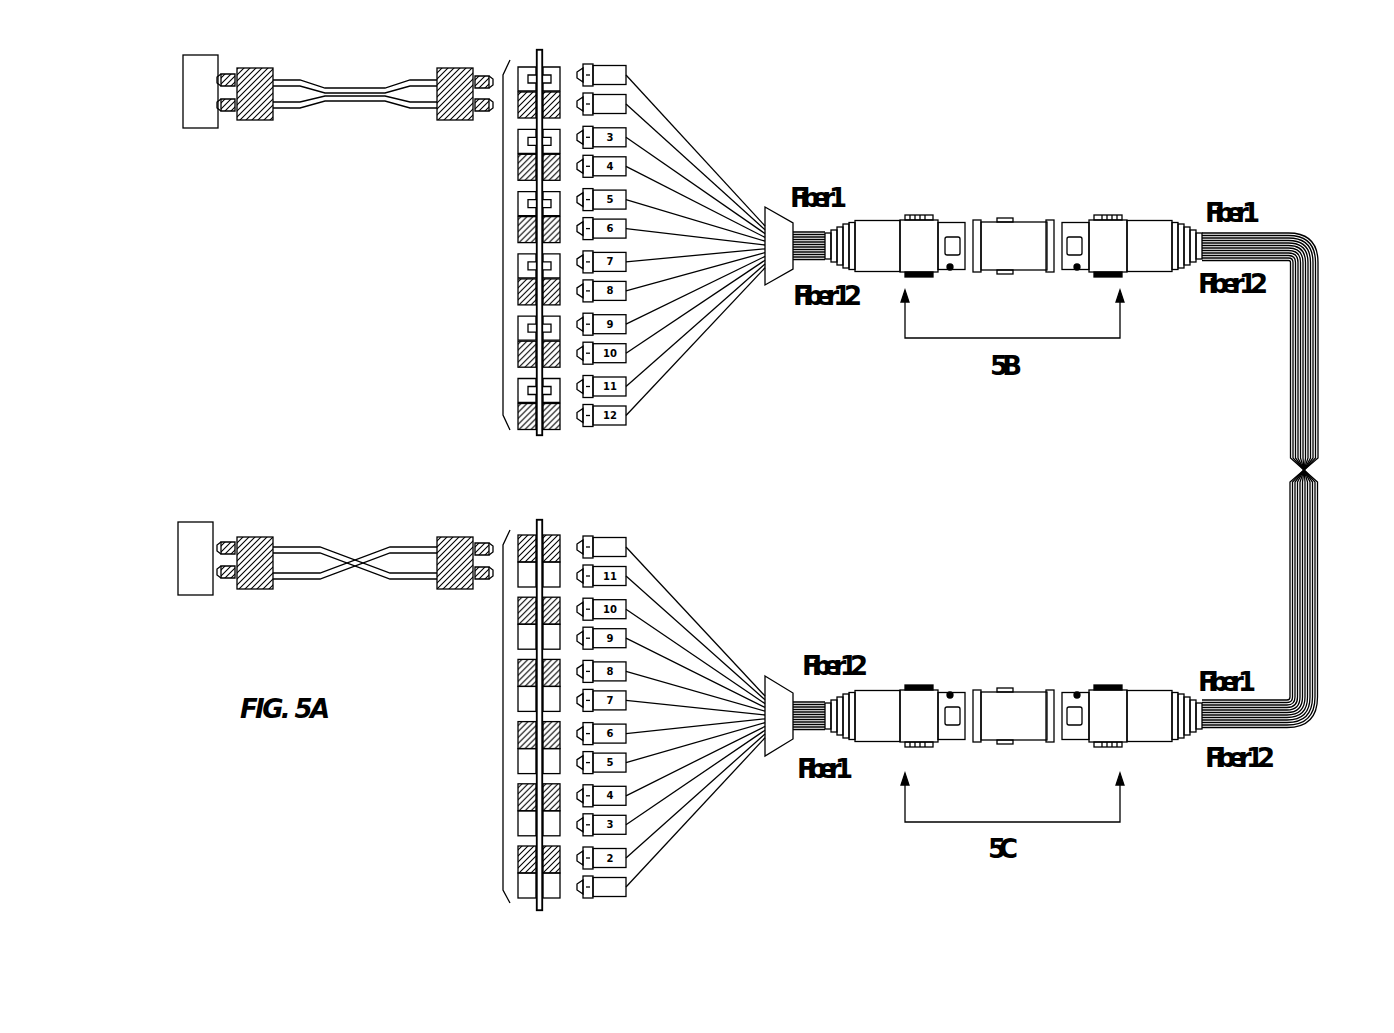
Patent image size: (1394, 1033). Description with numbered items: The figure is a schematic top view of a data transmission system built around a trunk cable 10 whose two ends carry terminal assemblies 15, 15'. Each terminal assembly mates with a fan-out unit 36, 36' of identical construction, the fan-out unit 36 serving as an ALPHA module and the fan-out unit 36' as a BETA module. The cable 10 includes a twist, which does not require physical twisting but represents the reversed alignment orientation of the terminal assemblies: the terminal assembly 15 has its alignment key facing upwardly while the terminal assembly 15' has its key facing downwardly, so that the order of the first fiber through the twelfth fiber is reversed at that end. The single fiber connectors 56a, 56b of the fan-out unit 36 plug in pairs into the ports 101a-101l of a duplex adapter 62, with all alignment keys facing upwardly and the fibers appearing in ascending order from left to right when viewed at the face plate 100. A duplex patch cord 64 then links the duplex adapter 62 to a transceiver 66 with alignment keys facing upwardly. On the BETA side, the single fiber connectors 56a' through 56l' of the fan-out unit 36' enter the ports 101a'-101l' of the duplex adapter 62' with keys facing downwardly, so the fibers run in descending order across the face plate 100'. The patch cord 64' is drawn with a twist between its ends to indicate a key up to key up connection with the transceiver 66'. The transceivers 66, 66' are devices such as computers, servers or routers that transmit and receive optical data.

The transceiver 66 is at (226, 79).
The patch cord 64 is at (355, 89).
The duplex adapter 62 is at (513, 219).
The face plate 100 is at (573, 232).
The single fiber connector 56a is at (621, 61).
The single fiber connector 56b is at (625, 101).
The ports 101a-101l is at (479, 245).
The fan-out unit 36 is at (774, 195).
The terminal assembly 15 is at (1013, 210).
The cable 10 is at (1320, 492).
The transceiver 66' is at (210, 534).
The patch cord 64' is at (355, 546).
The duplex adapter 62' is at (571, 682).
The face plate 100' is at (507, 692).
The single fiber connector 56a' is at (631, 528).
The single fiber connector 56l' is at (643, 887).
The ports 101a'-101l' is at (475, 716).
The fan-out unit 36' is at (782, 666).
The terminal assembly 15' is at (1016, 749).